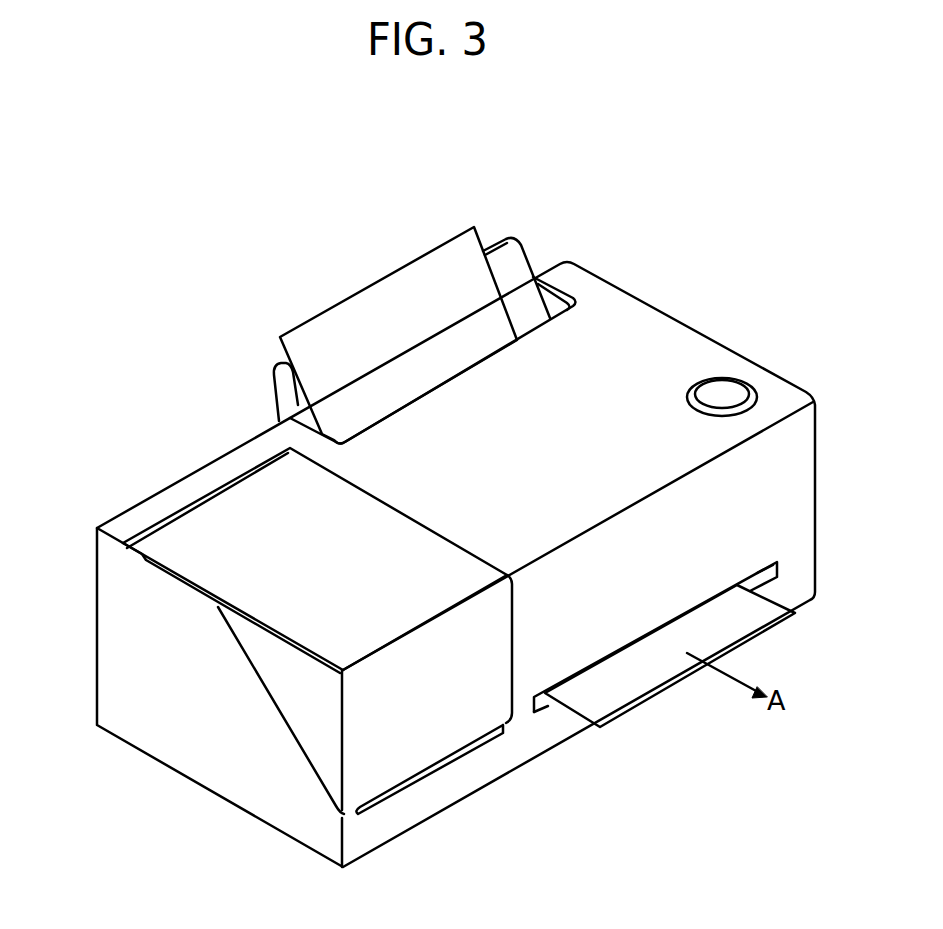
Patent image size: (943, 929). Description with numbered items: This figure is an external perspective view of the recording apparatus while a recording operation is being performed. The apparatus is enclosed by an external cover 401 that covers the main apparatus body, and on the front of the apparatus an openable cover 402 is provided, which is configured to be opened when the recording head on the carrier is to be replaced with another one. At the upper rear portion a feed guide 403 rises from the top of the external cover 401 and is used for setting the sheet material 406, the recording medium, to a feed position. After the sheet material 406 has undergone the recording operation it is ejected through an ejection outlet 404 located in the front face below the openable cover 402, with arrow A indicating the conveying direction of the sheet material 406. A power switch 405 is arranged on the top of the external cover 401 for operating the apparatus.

The external cover 401 is at (648, 320).
The openable cover 402 is at (203, 510).
The feed guide 403 is at (511, 257).
The ejection outlet 404 is at (547, 700).
The power switch 405 is at (727, 385).
The sheet material 406 is at (332, 320).